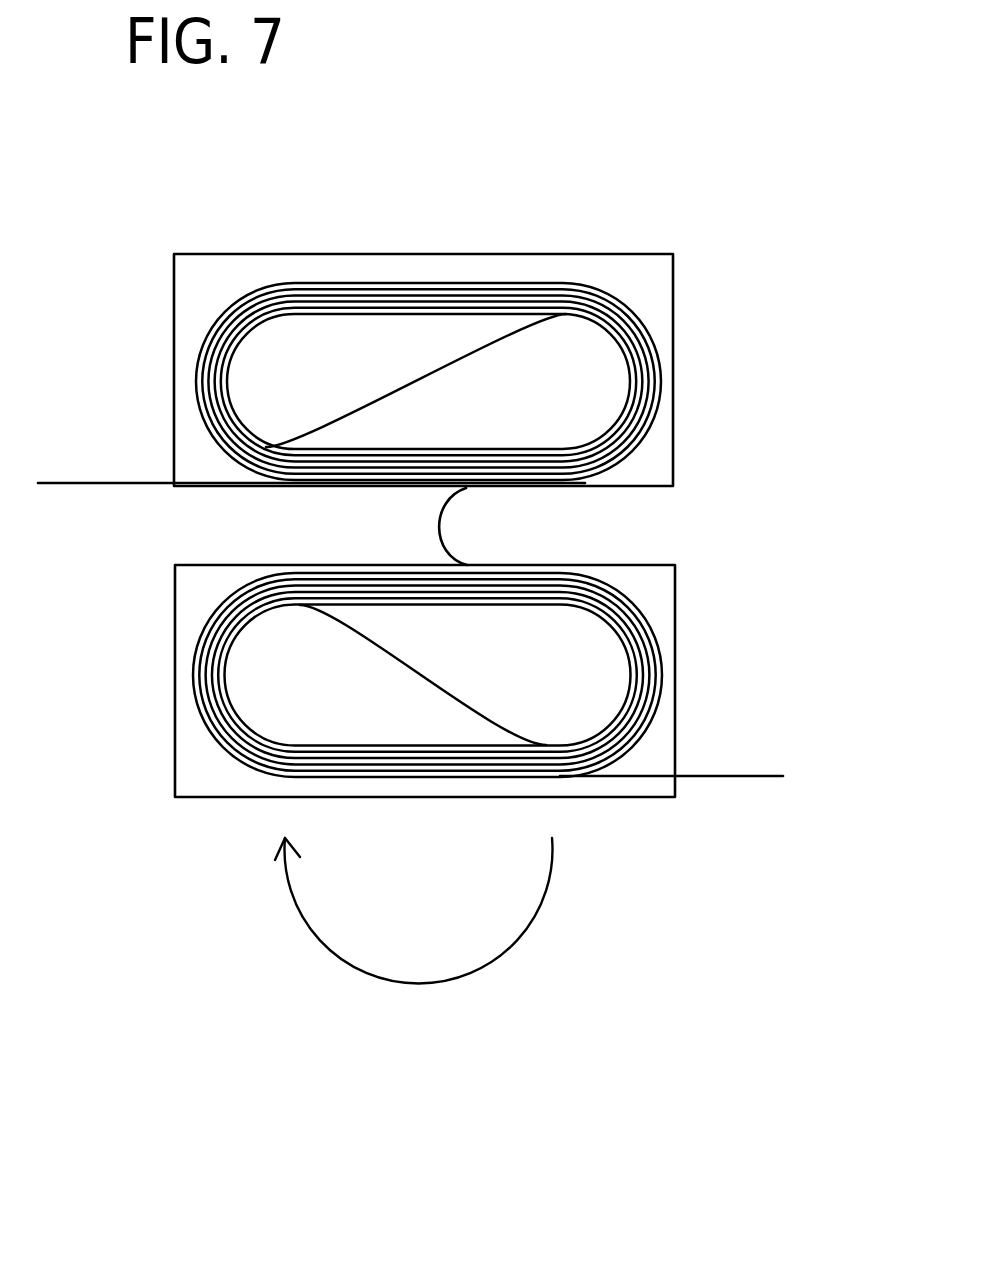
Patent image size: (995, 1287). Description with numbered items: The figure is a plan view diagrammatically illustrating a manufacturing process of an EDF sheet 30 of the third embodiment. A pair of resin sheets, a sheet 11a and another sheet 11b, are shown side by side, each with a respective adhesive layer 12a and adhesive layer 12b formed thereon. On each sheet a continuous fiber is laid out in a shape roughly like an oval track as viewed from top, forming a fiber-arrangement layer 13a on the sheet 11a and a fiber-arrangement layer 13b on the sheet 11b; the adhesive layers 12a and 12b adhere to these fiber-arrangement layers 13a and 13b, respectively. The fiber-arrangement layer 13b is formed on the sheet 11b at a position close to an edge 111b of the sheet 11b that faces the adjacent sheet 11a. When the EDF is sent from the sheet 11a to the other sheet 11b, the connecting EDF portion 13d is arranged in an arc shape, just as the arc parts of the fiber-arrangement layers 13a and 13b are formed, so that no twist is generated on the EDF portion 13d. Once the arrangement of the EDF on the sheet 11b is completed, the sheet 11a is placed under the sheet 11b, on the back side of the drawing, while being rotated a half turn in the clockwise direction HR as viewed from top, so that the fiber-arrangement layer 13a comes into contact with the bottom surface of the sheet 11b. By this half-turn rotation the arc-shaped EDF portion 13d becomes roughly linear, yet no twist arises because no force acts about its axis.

The EDF sheet 30 is at (582, 132).
The sheet 11a is at (676, 742).
The sheet 11b is at (674, 343).
The adhesive layer 12a is at (660, 605).
The adhesive layer 12b is at (653, 468).
The fiber-arrangement layer 13a is at (630, 776).
The fiber-arrangement layer 13b is at (203, 342).
The EDF portion 13d is at (440, 527).
The edge 111b is at (190, 490).
The clockwise direction HR is at (433, 988).